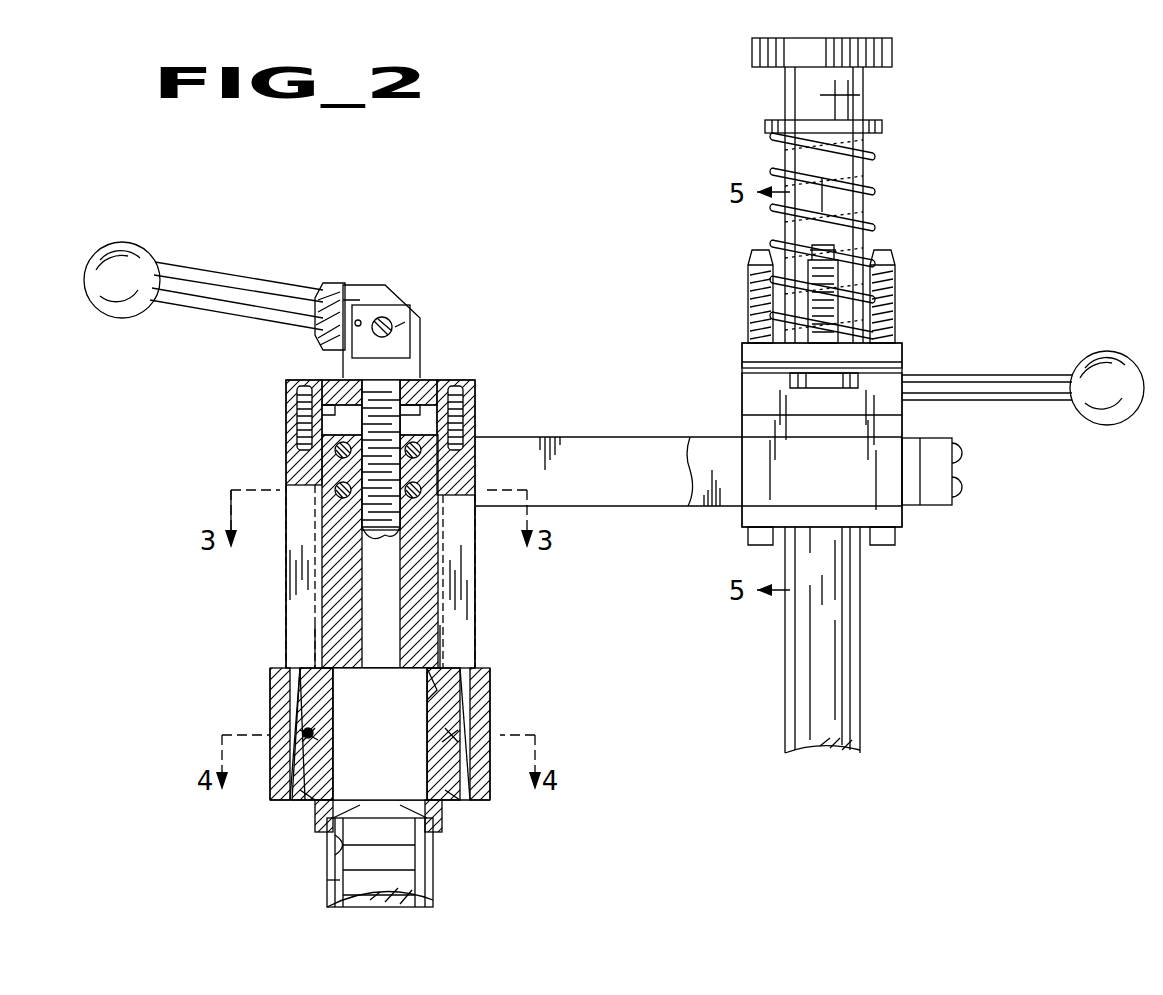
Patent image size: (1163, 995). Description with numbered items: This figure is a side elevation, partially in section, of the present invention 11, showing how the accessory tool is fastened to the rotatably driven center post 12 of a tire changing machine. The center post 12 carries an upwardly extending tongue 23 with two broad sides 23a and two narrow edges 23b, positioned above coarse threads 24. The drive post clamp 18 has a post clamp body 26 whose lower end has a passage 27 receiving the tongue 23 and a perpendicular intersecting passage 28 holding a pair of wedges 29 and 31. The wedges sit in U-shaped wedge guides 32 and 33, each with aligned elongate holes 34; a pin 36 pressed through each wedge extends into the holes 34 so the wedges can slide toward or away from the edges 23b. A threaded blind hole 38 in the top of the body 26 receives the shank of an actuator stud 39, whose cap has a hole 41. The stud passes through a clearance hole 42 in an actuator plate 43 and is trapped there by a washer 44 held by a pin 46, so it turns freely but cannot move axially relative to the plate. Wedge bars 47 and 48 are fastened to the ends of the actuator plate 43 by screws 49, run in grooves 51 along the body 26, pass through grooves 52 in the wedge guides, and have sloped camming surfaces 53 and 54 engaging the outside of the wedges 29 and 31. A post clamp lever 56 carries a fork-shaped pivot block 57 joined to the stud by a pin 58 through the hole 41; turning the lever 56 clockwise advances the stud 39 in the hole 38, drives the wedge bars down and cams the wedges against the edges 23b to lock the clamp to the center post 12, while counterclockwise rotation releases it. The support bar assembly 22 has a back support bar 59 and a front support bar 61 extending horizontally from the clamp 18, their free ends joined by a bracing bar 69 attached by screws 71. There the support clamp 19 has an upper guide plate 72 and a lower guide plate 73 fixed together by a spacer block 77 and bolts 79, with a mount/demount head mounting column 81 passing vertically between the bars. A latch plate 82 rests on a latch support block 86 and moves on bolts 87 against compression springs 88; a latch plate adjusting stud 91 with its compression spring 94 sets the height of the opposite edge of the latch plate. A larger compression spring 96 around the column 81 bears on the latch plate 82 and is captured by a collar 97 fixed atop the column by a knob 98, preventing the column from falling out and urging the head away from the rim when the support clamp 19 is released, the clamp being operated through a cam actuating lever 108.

The clamping apparatus 11 is at (978, 130).
The center post 12 is at (327, 887).
The drive post clamp 18 is at (286, 403).
The support clamp 19 is at (904, 345).
The support bar assembly 22 is at (645, 435).
The tongue 23 is at (373, 680).
The broad opposing sides 23a is at (402, 763).
The narrow edges 23b is at (322, 832).
The coarse threads 24 is at (433, 892).
The post clamp body 26 is at (313, 630).
The passage 27 is at (335, 852).
The passage 28 is at (420, 678).
The wedge 29 is at (478, 790).
The wedge 31 is at (307, 698).
The wedge guide 32 is at (488, 668).
The wedge guide 33 is at (275, 780).
The elongate holes 34 is at (465, 706).
The pin 36 is at (300, 730).
The threaded blind hole 38 is at (380, 524).
The actuator stud 39 is at (405, 342).
The hole 41 is at (393, 325).
The clearance hole 42 is at (400, 378).
The actuator plate 43 is at (330, 378).
The washer 44 is at (478, 420).
The pin 46 is at (376, 420).
The wedge bar 47 is at (470, 602).
The wedge bar 48 is at (295, 600).
The screws 49 is at (294, 392).
The grooves 51 is at (290, 576).
The grooves 52 is at (292, 678).
The camming surface 53 is at (455, 802).
The camming surface 54 is at (312, 802).
The post clamp lever 56 is at (182, 275).
The pivot block 57 is at (332, 288).
The pin 58 is at (381, 318).
The back support bar 59 is at (728, 508).
The front support bar 61 is at (645, 508).
The bracing bar 69 is at (938, 440).
The screws 71 is at (958, 487).
The upper guide plate 72 is at (742, 425).
The lower guide plate 73 is at (895, 526).
The spacer block 77 is at (802, 483).
The bolts 79 is at (880, 532).
The mount/demount head mounting column 81 is at (862, 608).
The latch plate 82 is at (903, 356).
The latch support block 86 is at (742, 396).
The bolts 87 is at (746, 274).
The compression springs 88 is at (748, 300).
The latch plate adjusting stud 91 is at (845, 270).
The compression spring 94 is at (760, 323).
The compression spring 96 is at (876, 152).
The collar 97 is at (884, 125).
The knob 98 is at (895, 52).
The cam actuating lever 108 is at (1046, 383).